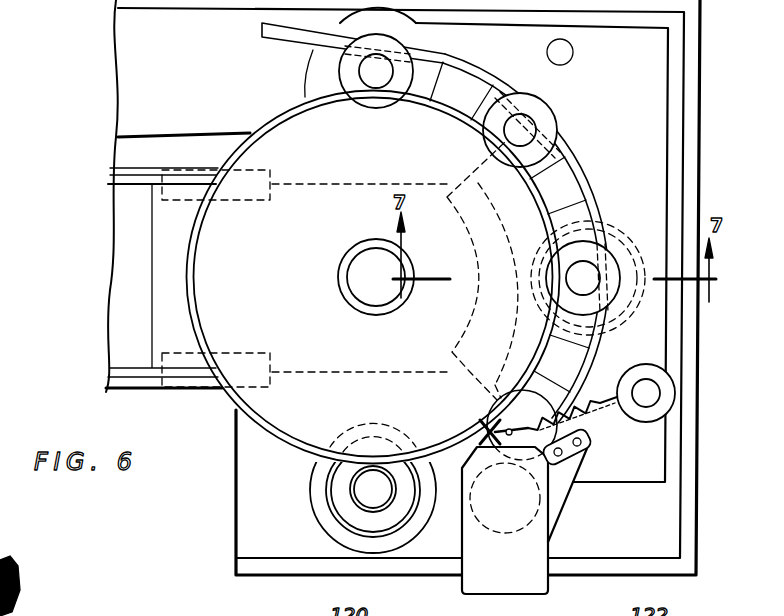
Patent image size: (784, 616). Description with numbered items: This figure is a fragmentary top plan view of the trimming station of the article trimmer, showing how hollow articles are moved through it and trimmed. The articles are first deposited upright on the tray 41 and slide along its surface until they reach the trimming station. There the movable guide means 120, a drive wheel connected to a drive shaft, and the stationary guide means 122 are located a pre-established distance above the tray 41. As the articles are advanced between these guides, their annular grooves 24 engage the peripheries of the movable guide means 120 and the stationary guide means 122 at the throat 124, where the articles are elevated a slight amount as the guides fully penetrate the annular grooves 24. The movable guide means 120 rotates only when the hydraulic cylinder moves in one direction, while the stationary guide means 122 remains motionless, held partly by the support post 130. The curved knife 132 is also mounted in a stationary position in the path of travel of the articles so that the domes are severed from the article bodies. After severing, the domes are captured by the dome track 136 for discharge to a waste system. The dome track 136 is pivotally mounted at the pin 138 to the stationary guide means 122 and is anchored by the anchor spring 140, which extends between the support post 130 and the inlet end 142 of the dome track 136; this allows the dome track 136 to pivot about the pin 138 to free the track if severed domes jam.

The tray 41 is at (197, 111).
The throat 124 is at (295, 44).
The stationary guide means 122 is at (628, 133).
The curved knife 132 is at (578, 176).
The movable guide means 120 is at (313, 271).
The anchor spring 140 is at (592, 395).
The support post 130 is at (648, 393).
The inlet end 142 is at (485, 428).
The pin 138 is at (586, 450).
The dome track 136 is at (549, 542).
The annular grooves 24 is at (355, 587).